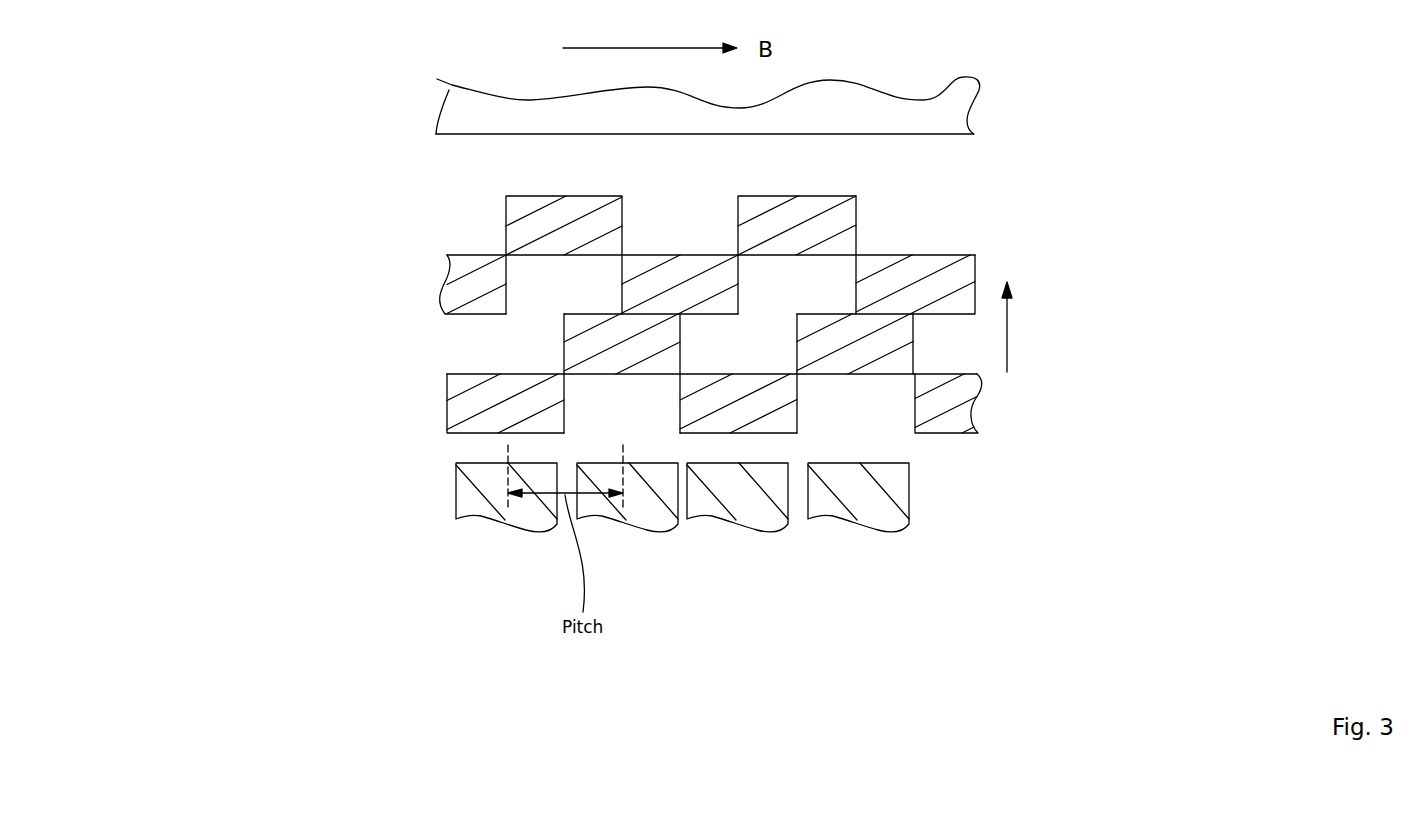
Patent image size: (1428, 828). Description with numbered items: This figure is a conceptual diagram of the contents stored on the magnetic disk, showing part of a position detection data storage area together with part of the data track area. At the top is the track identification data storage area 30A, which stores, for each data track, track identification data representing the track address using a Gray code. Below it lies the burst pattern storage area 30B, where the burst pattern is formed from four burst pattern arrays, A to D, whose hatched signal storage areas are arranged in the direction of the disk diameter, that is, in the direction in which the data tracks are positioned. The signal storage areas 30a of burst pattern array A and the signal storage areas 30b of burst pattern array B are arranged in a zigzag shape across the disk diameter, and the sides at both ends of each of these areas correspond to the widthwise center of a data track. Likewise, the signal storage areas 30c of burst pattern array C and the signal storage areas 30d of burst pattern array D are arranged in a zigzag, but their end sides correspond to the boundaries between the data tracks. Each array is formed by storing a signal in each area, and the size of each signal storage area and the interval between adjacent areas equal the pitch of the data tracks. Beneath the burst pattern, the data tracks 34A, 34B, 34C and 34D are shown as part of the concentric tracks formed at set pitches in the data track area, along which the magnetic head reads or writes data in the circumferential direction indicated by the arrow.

The track identification data storage area 30A is at (829, 107).
The burst pattern storage area 30B is at (1067, 193).
The signal storage areas of the burst pattern array A 30a is at (622, 226).
The signal storage areas of the burst pattern array B 30b is at (506, 285).
The signal storage areas of the burst pattern array C 30c is at (564, 343).
The signal storage areas of the burst pattern array D 30d is at (564, 398).
The data track 34A is at (480, 522).
The data track 34B is at (603, 519).
The data track 34C is at (718, 518).
The data track 34D is at (830, 518).